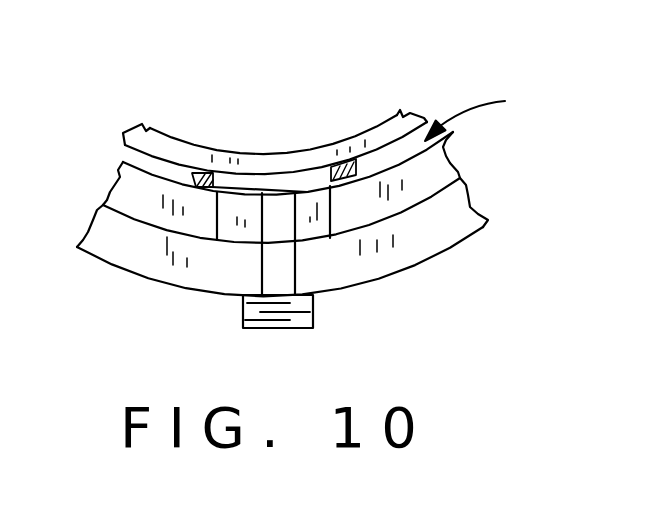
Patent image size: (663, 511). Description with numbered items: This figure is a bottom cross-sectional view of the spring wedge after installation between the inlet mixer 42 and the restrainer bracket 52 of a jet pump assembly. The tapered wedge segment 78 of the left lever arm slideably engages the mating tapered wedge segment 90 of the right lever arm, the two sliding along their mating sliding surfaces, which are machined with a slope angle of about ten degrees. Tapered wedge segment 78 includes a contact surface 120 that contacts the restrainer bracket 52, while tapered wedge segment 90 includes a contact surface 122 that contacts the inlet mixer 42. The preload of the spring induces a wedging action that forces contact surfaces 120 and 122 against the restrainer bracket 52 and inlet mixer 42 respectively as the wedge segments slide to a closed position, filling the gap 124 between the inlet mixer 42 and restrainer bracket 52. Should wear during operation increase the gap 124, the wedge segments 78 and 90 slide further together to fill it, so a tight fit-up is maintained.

The inlet mixer 42 is at (425, 119).
The restrainer bracket 52 is at (433, 181).
The tapered wedge segment 78 is at (232, 180).
The tapered wedge segment 90 is at (327, 173).
The contact surface 120 is at (232, 180).
The contact surface 122 is at (304, 172).
The gap 124 is at (487, 116).